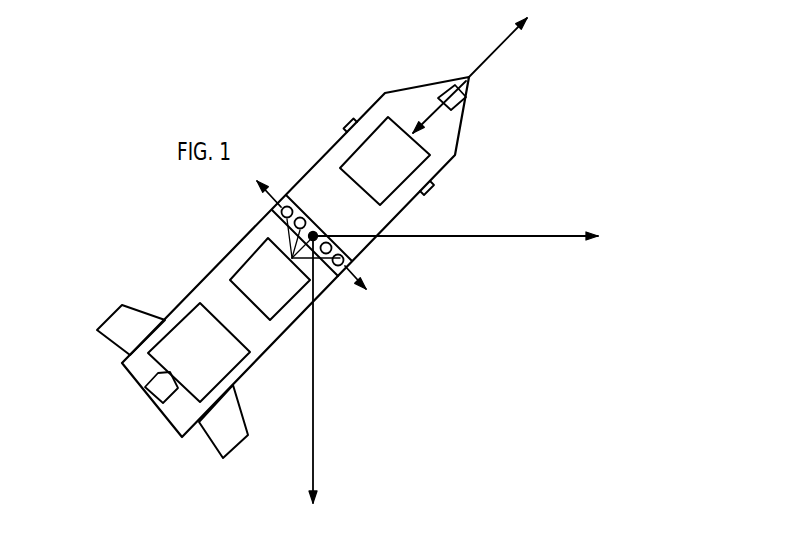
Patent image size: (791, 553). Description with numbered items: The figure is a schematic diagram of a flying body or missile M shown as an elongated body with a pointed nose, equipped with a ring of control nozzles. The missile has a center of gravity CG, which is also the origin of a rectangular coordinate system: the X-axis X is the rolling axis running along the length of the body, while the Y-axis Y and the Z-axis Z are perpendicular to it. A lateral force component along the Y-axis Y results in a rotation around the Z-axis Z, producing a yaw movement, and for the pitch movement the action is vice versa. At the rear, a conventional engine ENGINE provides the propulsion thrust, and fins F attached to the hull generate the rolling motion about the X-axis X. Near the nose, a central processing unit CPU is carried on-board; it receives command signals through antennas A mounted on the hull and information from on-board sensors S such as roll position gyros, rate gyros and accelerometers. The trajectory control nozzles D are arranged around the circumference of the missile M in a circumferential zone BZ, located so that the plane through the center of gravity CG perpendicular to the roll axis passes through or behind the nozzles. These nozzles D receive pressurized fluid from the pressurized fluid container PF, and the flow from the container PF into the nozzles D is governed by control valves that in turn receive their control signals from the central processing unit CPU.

The flying body or missile M is at (310, 170).
The central processing unit CPU is at (435, 145).
The on-board sensors S is at (463, 98).
The antennas A is at (349, 122).
The trajectory control nozzles D is at (294, 197).
The circumferential zone BZ is at (357, 262).
The center of gravity CG is at (315, 233).
The pressurized fluid container PF is at (272, 297).
The engine ENGINE is at (190, 353).
The fins F is at (118, 328).
The X-axis X is at (560, 38).
The Y-axis Y is at (480, 238).
The Z-axis Z is at (326, 424).